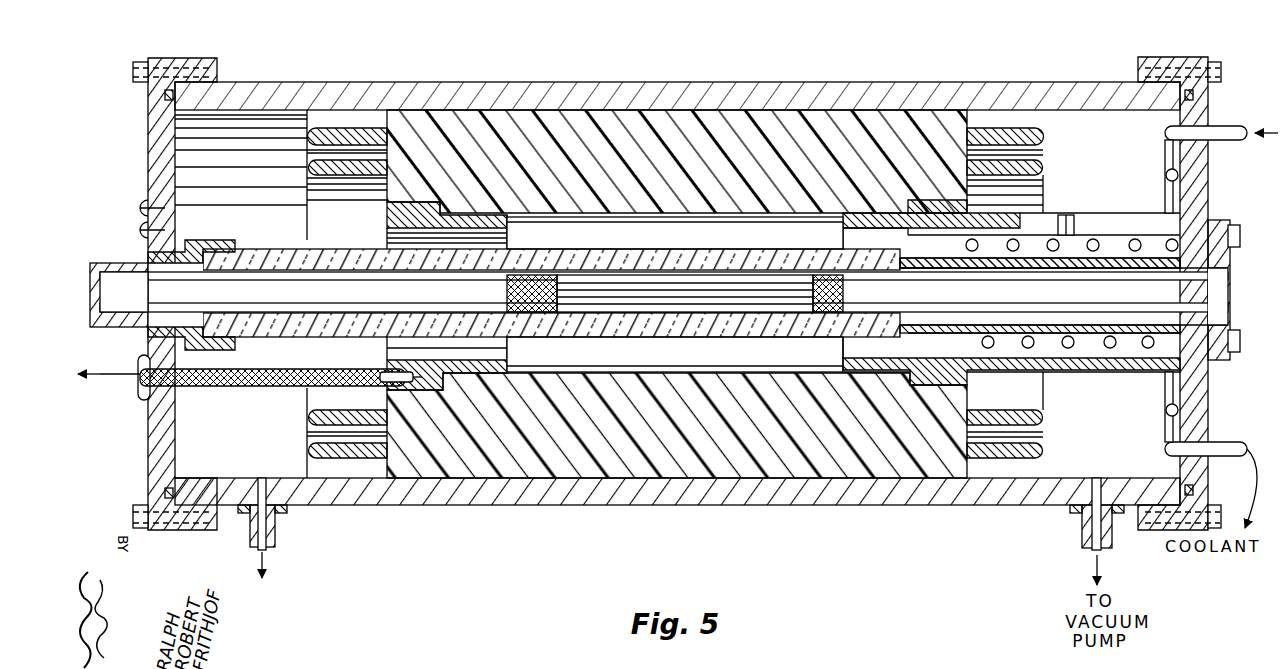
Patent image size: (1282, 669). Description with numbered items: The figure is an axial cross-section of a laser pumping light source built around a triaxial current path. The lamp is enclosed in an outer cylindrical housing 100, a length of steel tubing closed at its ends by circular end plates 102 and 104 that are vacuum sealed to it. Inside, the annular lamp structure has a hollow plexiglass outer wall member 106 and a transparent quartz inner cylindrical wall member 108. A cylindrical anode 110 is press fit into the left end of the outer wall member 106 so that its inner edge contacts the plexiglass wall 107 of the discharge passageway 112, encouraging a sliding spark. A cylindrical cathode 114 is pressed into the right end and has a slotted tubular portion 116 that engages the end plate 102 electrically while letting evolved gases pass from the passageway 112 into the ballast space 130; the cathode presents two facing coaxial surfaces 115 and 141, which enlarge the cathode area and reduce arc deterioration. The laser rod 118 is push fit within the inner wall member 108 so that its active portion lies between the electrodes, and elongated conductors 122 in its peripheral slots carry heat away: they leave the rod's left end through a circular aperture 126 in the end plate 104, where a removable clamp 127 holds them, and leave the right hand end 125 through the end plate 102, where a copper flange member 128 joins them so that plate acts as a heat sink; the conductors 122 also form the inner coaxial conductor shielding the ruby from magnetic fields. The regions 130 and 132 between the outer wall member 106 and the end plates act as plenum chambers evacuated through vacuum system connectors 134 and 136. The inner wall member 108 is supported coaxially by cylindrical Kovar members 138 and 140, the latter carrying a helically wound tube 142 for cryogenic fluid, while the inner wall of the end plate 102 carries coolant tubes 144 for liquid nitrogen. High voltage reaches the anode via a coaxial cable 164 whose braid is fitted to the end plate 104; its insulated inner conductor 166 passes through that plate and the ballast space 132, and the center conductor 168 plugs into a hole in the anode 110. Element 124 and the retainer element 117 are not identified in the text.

The outer cylindrical housing 100 is at (845, 84).
The end plate 102 is at (1192, 60).
The end plate 104 is at (160, 64).
The outer wall member 106 is at (610, 120).
The plexiglass wall 107 is at (578, 372).
The inner cylindrical wall member 108 is at (652, 228).
The cylindrical anode 110 is at (452, 206).
The discharge passageway 112 is at (682, 364).
The cylindrical cathode 114 is at (935, 200).
The cathode surface 115 is at (850, 215).
The tubular portion 116 is at (1114, 371).
The bearing retainer 117 is at (1065, 225).
The laser rod 118 is at (690, 284).
The elongated conductors 122 is at (333, 296).
The left plug 124 is at (522, 262).
The right hand end 125 is at (832, 270).
The circular aperture 126 is at (148, 332).
The removable clamp 127 is at (112, 263).
The copper flange member 128 is at (1218, 226).
The ballast space 130 is at (1075, 130).
The ballast space 132 is at (262, 125).
The vacuum system connector 134 is at (1080, 524).
The vacuum system connector 136 is at (278, 538).
The Kovar member 138 is at (186, 248).
The Kovar member 140 is at (970, 340).
The cathode surface 141 is at (906, 240).
The helically wound tube 142 is at (1100, 240).
The coolant tubes 144 is at (1165, 136).
The coaxial cable 164 is at (122, 386).
The insulated inner conductor of the cable 166 is at (222, 384).
The center conductor 168 is at (386, 371).